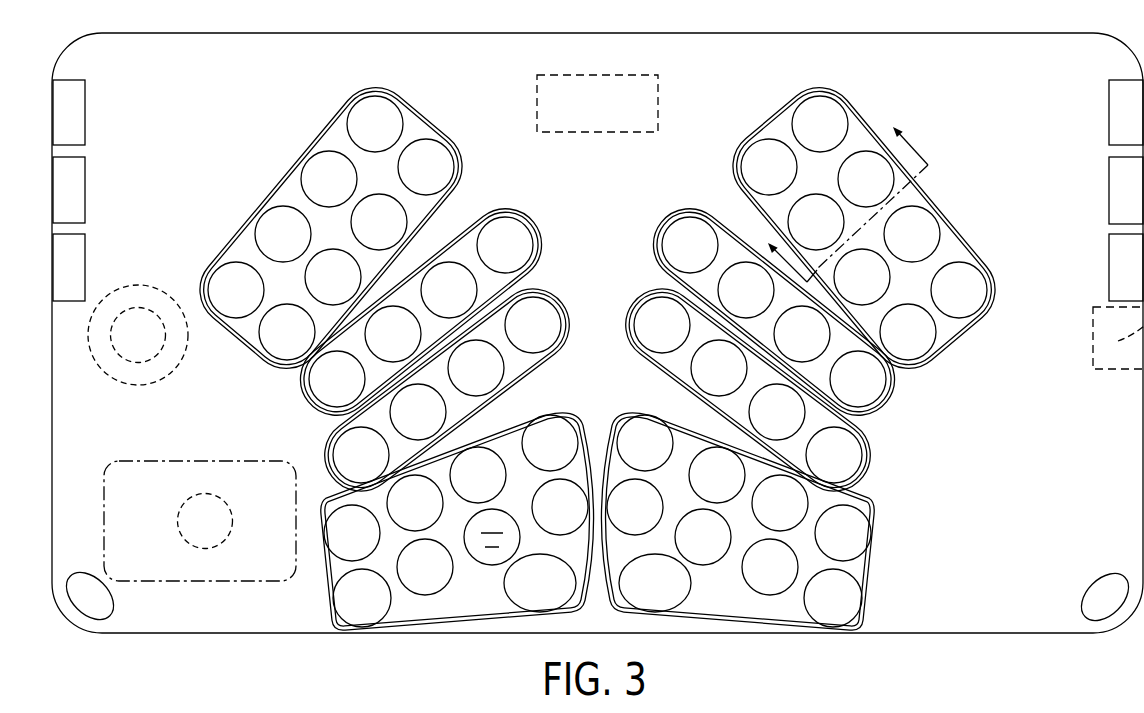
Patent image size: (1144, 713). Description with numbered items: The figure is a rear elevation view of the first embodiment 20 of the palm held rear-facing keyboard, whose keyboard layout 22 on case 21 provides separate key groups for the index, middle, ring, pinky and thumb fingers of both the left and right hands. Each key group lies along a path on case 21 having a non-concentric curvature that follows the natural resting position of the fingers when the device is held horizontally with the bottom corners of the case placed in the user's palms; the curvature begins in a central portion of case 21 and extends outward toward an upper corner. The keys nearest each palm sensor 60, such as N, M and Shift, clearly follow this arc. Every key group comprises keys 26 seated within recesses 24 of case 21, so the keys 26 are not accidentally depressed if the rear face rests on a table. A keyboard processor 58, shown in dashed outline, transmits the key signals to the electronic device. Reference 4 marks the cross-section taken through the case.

The first embodiment 20 is at (326, 651).
The case 21 is at (216, 632).
The keyboard layout 22 is at (262, 160).
The recesses 24 is at (245, 333).
The keys 26 is at (428, 590).
The offset distance 4 is at (840, 191).
The keyboard processor 58 is at (658, 103).
The palm sensor 60 is at (88, 594).